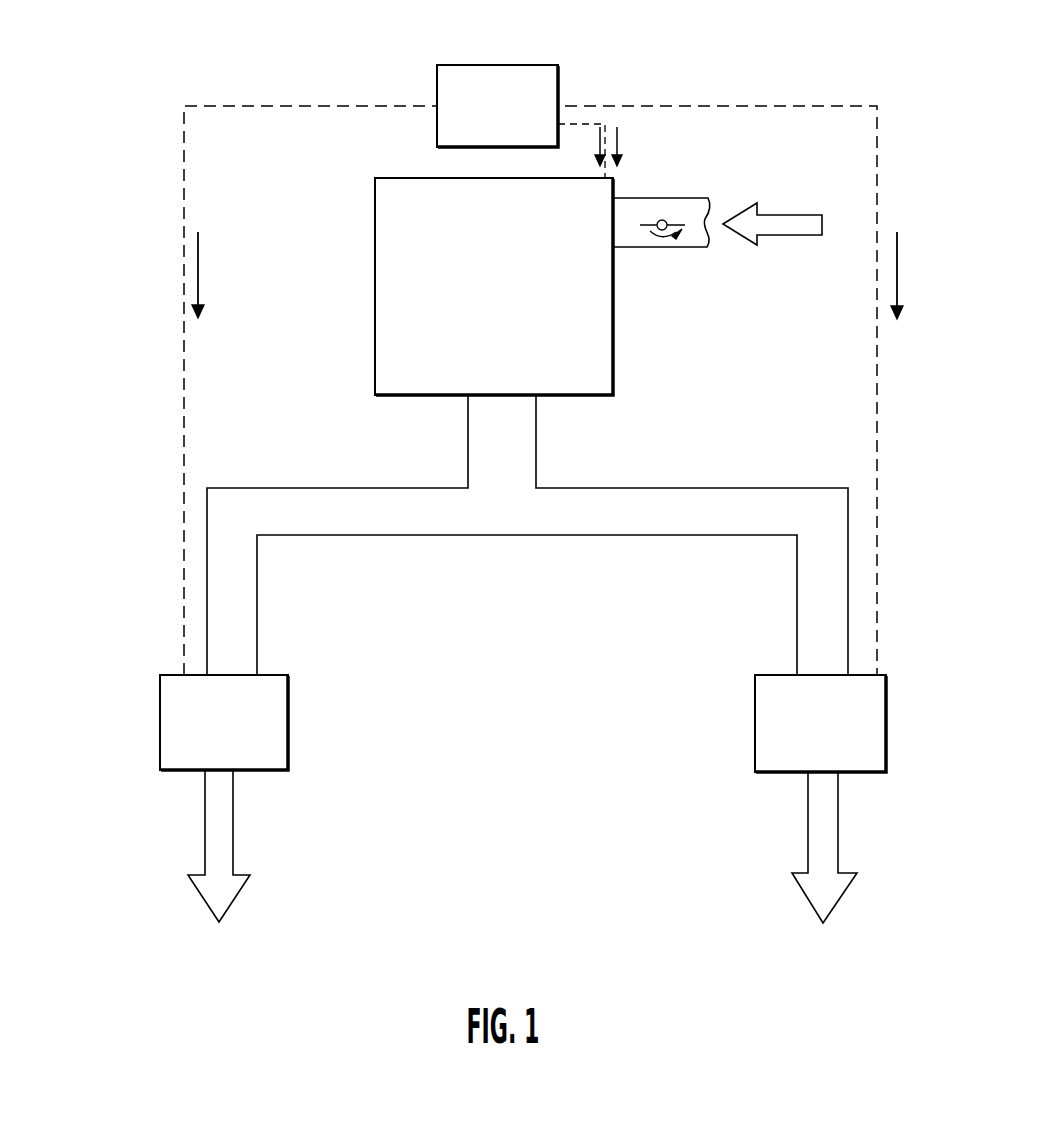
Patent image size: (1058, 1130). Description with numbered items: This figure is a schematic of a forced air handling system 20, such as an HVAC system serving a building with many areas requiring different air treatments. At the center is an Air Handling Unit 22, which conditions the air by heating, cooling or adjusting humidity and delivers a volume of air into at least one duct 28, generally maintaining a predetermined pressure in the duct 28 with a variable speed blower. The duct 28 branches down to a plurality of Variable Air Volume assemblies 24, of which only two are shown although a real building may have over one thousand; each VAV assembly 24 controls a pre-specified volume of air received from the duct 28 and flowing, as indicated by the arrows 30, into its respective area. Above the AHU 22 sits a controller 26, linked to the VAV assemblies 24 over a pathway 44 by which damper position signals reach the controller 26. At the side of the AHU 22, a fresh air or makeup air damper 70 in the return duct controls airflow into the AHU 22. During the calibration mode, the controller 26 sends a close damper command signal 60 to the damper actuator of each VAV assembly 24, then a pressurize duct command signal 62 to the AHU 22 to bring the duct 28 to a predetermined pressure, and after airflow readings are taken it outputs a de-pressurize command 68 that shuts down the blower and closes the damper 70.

The forced air handling system 20 is at (122, 126).
The Air Handling Unit 22 is at (480, 304).
The Variable Air Volume assembly 24 is at (211, 737).
The controller 26 is at (484, 121).
The duct 28 is at (528, 536).
The arrows indicating airflow 30 is at (235, 817).
The pathway 44 is at (185, 428).
The close damper command signal 60 is at (200, 270).
The pressurize duct command signal 62 is at (598, 147).
The de-pressurize command 68 is at (620, 148).
The damper 70 is at (672, 247).